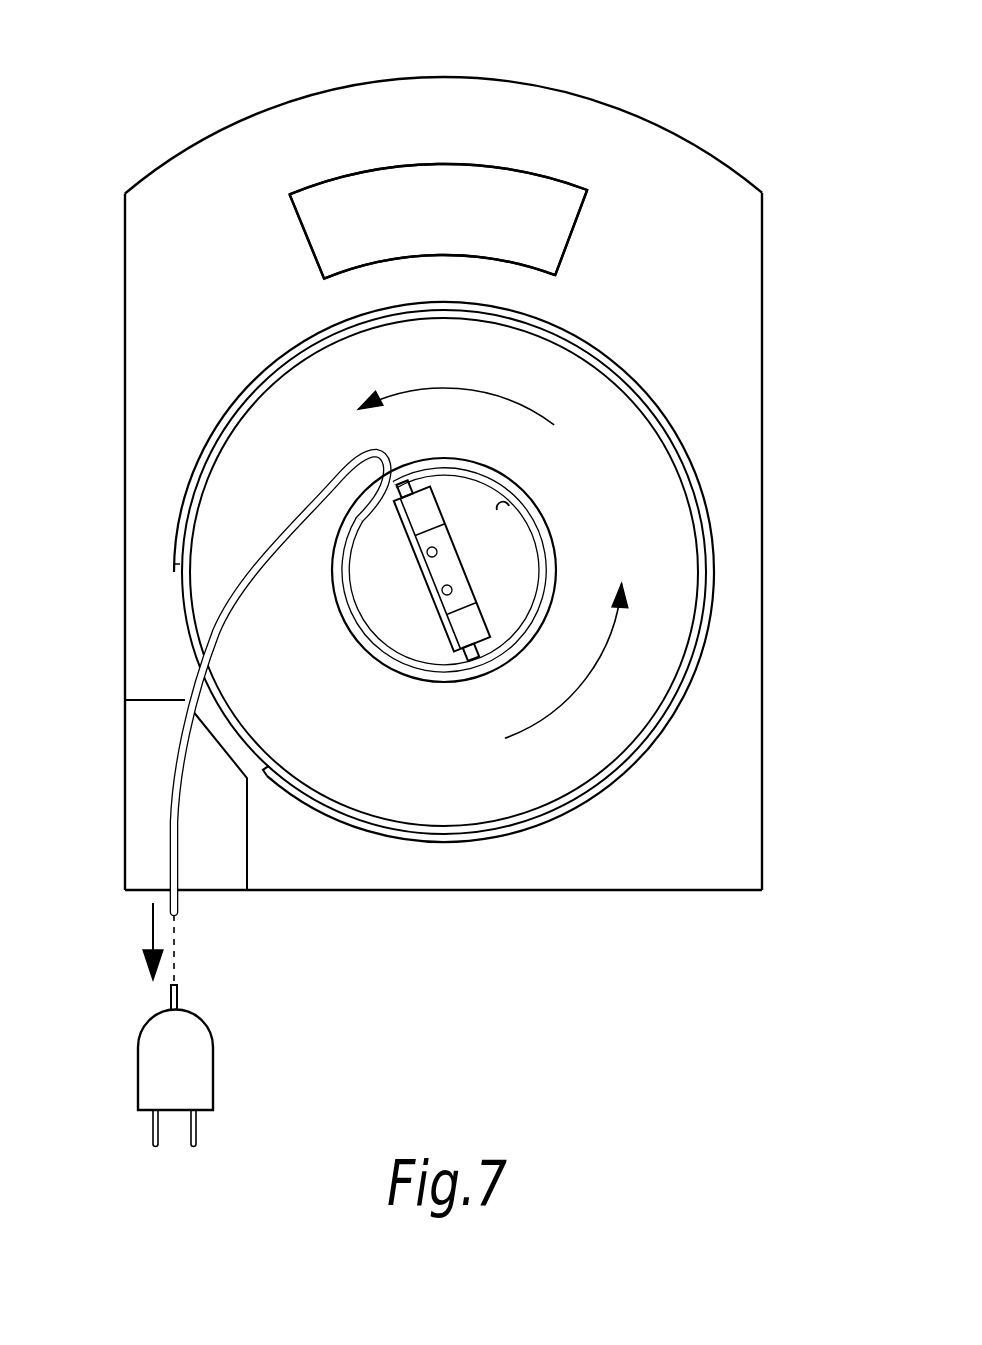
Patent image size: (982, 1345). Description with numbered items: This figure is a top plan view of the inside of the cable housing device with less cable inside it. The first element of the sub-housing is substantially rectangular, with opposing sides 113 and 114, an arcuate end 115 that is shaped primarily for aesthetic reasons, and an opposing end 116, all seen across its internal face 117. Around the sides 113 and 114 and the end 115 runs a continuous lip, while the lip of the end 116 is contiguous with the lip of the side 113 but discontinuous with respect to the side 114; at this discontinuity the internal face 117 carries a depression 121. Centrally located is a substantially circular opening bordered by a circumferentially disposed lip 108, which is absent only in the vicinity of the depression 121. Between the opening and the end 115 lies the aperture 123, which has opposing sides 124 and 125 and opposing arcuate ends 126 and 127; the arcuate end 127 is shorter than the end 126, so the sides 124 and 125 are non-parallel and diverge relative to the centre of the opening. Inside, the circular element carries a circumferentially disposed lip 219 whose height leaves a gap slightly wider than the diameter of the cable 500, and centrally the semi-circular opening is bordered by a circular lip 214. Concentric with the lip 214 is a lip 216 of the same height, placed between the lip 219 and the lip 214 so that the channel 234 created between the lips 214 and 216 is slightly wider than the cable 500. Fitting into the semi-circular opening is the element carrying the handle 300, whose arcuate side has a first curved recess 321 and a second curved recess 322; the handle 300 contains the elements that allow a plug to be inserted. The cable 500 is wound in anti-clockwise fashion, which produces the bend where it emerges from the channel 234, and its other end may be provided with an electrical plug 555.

The circumferentially disposed lip 108 is at (198, 452).
The side 113 is at (765, 778).
The side 114 is at (124, 547).
The end 115 is at (548, 90).
The end 116 is at (460, 895).
The internal face 117 is at (716, 338).
The depression 121 is at (225, 873).
The aperture 123 is at (432, 200).
The side 124 is at (577, 233).
The side 125 is at (302, 230).
The end 126 is at (350, 180).
The end 127 is at (503, 263).
The lip 214 is at (493, 503).
The lip 216 is at (457, 687).
The circumferentially disposed lip 219 is at (245, 727).
The channel 234 is at (540, 548).
The handle 300 is at (423, 510).
The first curved recess 321 is at (427, 555).
The second curved recess 322 is at (445, 595).
The cable 500 is at (170, 830).
The electrical plug 555 is at (157, 1072).